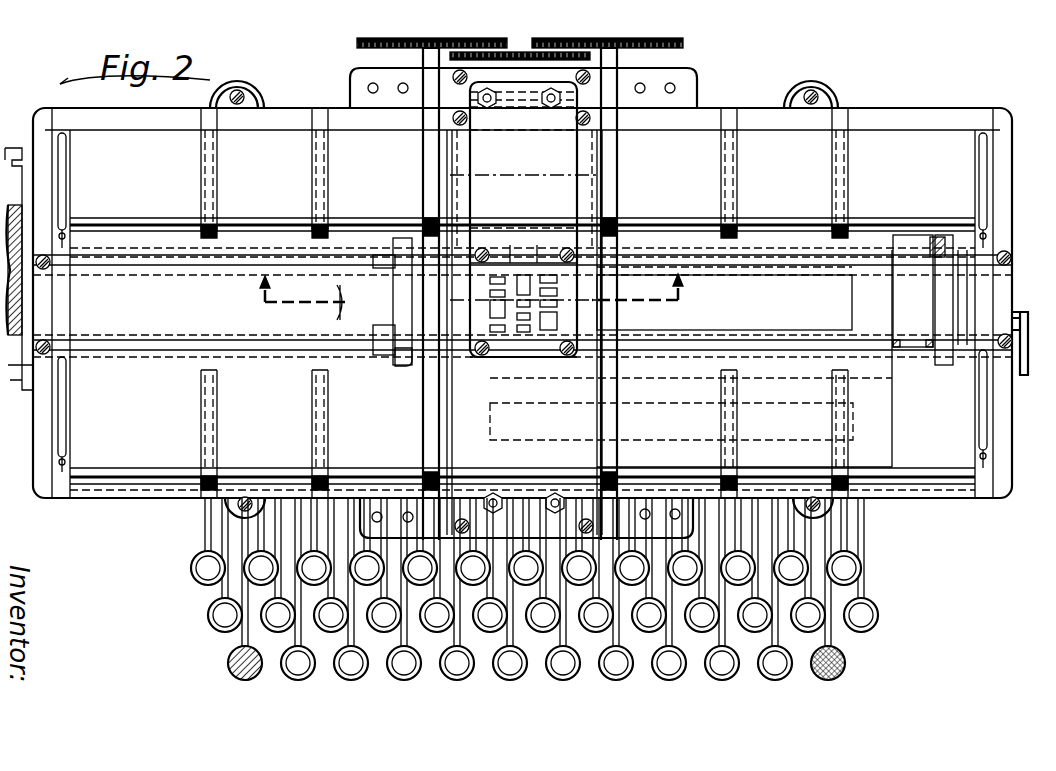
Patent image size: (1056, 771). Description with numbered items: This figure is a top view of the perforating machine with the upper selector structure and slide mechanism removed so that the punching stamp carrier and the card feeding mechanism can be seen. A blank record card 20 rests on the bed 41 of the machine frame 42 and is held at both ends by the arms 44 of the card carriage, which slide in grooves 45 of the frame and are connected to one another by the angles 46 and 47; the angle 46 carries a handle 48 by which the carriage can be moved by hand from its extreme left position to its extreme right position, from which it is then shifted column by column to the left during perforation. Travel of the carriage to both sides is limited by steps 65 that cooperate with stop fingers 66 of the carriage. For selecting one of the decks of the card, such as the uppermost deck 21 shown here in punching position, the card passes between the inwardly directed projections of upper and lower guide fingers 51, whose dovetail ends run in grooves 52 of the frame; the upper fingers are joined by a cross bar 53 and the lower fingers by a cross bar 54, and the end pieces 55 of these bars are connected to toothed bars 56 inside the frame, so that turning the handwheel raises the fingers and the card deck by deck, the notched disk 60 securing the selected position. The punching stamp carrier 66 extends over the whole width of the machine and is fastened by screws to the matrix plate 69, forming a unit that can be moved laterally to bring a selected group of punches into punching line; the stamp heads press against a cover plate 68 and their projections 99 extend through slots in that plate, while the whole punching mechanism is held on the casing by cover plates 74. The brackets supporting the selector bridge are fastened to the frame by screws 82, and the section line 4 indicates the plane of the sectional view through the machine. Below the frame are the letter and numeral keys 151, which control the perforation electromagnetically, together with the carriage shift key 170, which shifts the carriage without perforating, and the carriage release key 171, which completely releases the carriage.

The section line 4- 4 is at (466, 288).
The record card 20 is at (888, 413).
The hole combinational deck 21 is at (850, 296).
The bed 41 is at (945, 128).
The machine frame 42 is at (893, 120).
The arms 44 is at (428, 340).
The grooves 45 is at (195, 266).
The angle 46 is at (400, 366).
The angle 47 is at (944, 366).
The handle 48 is at (337, 318).
The guide fingers 51 is at (620, 218).
The grooves 52 is at (835, 158).
The cross bar 53 is at (254, 218).
The cross bar 54 is at (156, 485).
The end pieces 55 is at (66, 222).
The toothed bars 56 is at (66, 424).
The disk 60 is at (1026, 368).
The steps 65 is at (43, 342).
The punching stamp carrier 66 is at (568, 163).
The cover plate 68 is at (570, 320).
The matrix plate 69 is at (596, 196).
The cover plates 74 is at (452, 117).
The screws 82 is at (360, 74).
The projections 99 is at (550, 315).
The letter and numeral keys 151 is at (215, 612).
The carriage shift key 170 is at (228, 662).
The carriage release key 171 is at (845, 663).